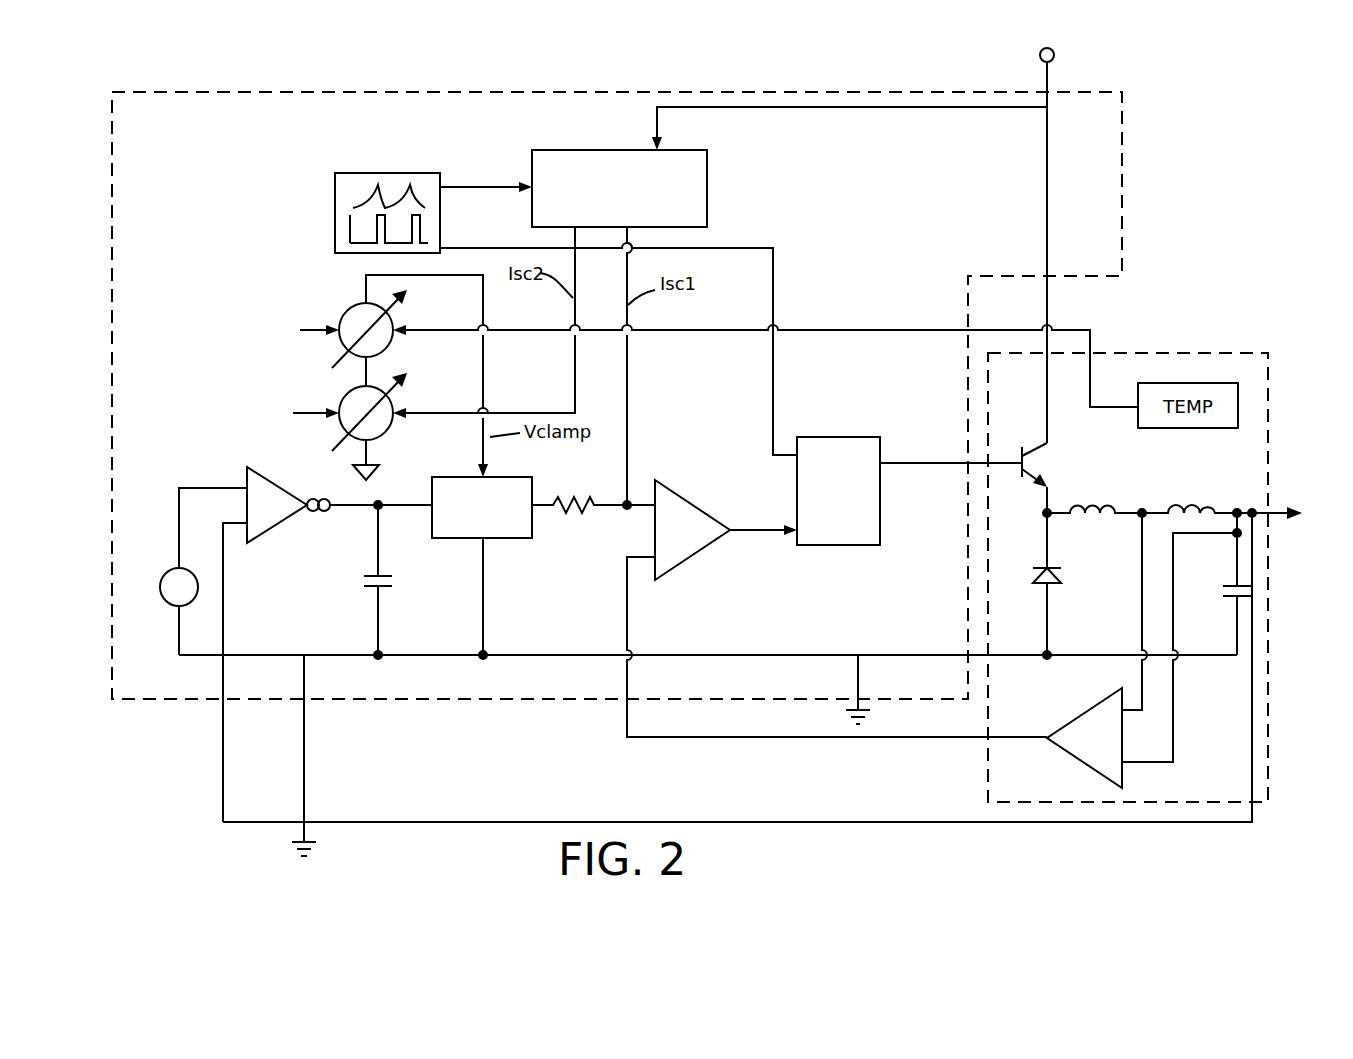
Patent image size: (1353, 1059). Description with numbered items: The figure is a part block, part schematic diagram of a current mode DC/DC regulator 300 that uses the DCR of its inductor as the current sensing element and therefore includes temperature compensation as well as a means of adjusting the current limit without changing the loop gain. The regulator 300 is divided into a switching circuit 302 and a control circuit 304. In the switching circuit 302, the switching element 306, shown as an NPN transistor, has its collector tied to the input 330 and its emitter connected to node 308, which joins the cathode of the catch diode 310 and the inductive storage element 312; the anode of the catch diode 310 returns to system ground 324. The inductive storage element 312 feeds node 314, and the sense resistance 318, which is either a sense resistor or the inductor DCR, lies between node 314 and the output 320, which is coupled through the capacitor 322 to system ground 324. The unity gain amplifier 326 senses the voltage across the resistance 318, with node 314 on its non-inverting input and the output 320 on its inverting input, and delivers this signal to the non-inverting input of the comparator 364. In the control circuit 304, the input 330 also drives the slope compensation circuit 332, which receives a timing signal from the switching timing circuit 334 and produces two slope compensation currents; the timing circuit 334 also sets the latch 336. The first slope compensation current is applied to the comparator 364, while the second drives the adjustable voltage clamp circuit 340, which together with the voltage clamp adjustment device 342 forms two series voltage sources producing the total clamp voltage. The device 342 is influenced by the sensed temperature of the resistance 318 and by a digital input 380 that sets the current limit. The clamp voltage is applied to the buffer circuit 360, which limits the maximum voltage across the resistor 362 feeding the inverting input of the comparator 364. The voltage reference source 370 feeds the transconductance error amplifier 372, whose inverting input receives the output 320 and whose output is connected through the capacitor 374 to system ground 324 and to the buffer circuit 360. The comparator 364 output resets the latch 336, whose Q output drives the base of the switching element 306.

The DC/DC regulator 300 is at (1195, 275).
The switching circuit 302 is at (1198, 352).
The control circuit 304 is at (1122, 163).
The switching element 306 is at (1036, 440).
The node 308 is at (1049, 508).
The catch diode 310 is at (1055, 583).
The inductive storage element 312 is at (1112, 498).
The node 314 is at (1138, 517).
The sense resistance 318 is at (1192, 498).
The output 320 is at (1240, 510).
The capacitor 322 is at (1234, 598).
The system ground 324 is at (325, 657).
The unity gain amplifier 326 is at (1108, 698).
The input 330 is at (1055, 62).
The slope compensation circuit 332 is at (562, 150).
The switching timing circuit 334 is at (388, 173).
The latch 336 is at (815, 437).
The adjustable voltage clamp circuit 340 is at (341, 394).
The voltage clamp adjustment device 342 is at (347, 312).
The buffer circuit 360 is at (470, 477).
The resistor 362 is at (593, 498).
The comparator 364 is at (700, 505).
The voltage reference source 370 is at (170, 570).
The transconductance error amplifier 372 is at (267, 480).
The capacitor 374 is at (370, 589).
The digital input 380 is at (231, 321).